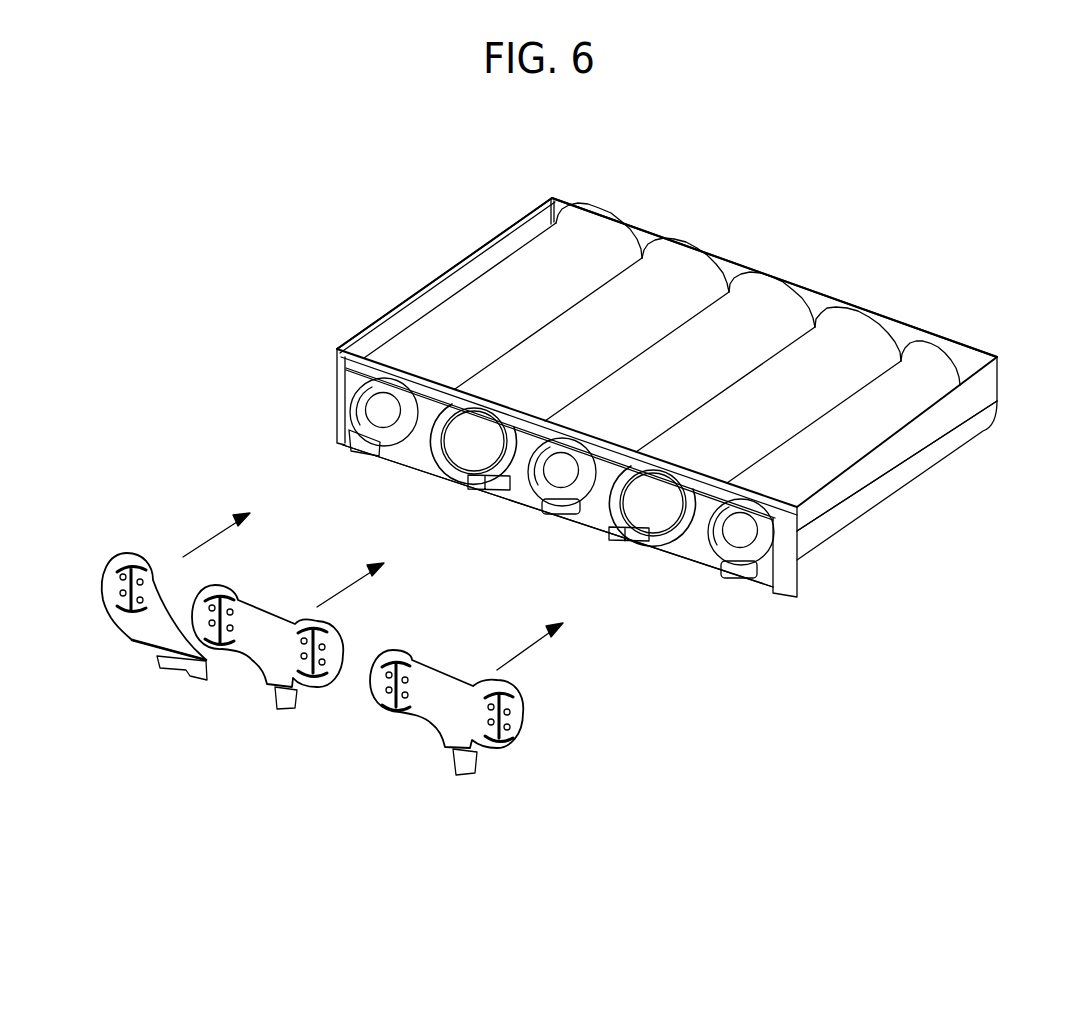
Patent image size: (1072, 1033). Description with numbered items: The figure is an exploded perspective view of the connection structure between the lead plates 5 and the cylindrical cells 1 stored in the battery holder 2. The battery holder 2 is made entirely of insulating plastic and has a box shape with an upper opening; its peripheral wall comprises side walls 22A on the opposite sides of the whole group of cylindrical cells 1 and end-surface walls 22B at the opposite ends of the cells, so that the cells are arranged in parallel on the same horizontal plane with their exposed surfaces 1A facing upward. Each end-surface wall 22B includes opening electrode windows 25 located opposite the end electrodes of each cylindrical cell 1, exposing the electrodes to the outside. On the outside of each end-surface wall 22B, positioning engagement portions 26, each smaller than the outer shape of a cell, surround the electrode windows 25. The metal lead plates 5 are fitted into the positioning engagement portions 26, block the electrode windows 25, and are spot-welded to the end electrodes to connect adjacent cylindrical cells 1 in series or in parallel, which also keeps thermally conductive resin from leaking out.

The cylindrical cell 1 is at (702, 332).
The exposed surface 1A is at (596, 238).
The battery holder 2 is at (913, 515).
The lead plate 5 is at (150, 633).
The side wall 22A is at (400, 317).
The end-surface wall 22B is at (817, 300).
The electrode window 25 is at (347, 400).
The positioning engagement portion 26 is at (345, 425).